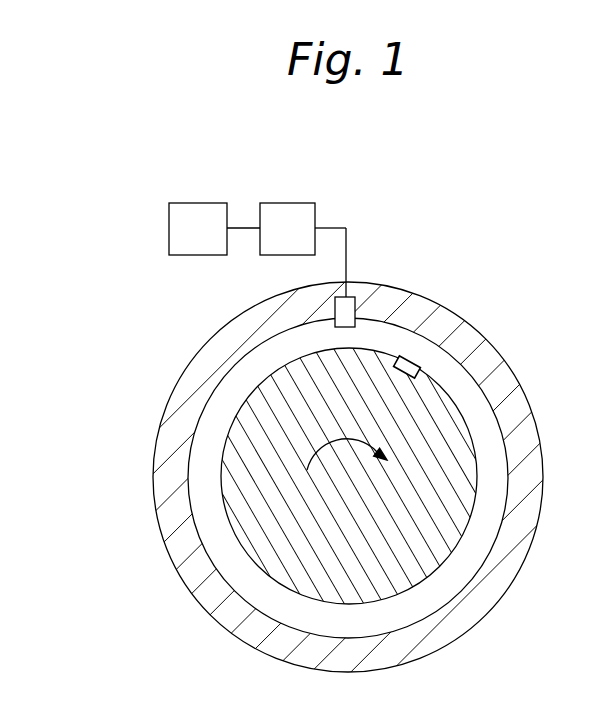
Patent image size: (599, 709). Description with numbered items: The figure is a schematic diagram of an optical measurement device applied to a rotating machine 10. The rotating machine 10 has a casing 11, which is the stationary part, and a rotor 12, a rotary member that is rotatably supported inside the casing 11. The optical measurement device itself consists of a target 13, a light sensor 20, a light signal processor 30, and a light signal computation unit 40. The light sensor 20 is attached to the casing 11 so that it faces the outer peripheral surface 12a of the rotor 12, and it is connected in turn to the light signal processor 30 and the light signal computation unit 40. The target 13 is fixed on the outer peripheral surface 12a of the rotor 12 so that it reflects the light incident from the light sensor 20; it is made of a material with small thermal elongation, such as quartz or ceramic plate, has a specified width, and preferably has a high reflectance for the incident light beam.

The rotating machine 10 is at (124, 365).
The casing 11 is at (180, 563).
The rotor 12 is at (349, 455).
The outer peripheral surface 12a is at (440, 567).
The target 13 is at (418, 363).
The light sensor 20 is at (357, 305).
The light signal processor 30 is at (288, 215).
The light signal computation unit 40 is at (203, 215).